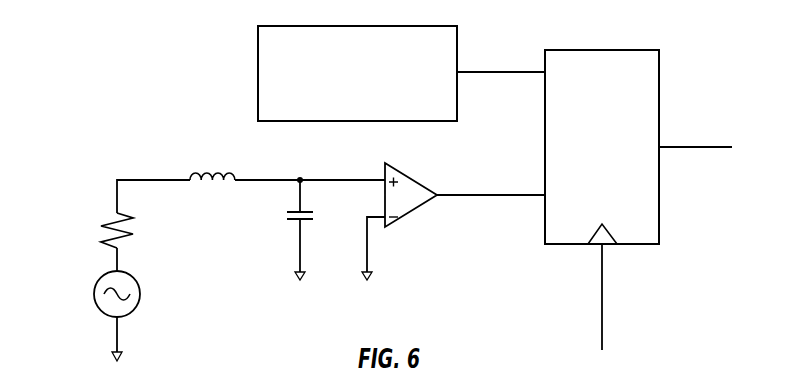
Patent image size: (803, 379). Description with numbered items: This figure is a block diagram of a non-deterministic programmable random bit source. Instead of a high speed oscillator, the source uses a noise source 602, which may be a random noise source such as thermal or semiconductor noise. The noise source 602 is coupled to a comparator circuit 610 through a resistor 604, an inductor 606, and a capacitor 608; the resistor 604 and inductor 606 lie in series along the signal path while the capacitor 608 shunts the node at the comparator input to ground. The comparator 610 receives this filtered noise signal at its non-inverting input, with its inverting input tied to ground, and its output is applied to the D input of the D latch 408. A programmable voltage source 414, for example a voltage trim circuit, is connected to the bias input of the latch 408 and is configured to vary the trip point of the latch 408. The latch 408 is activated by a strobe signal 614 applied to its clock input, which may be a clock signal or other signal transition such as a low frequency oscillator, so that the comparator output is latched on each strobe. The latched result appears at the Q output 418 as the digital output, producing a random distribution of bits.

The noise source 602 is at (97, 292).
The resistor 604 is at (100, 220).
The inductor 606 is at (213, 177).
The capacitor 608 is at (292, 223).
The comparator circuit 610 is at (411, 177).
The programmable voltage source 414 is at (258, 73).
The D latch 408 is at (602, 49).
The Q output 418 is at (695, 145).
The strobe signal 614 is at (602, 292).